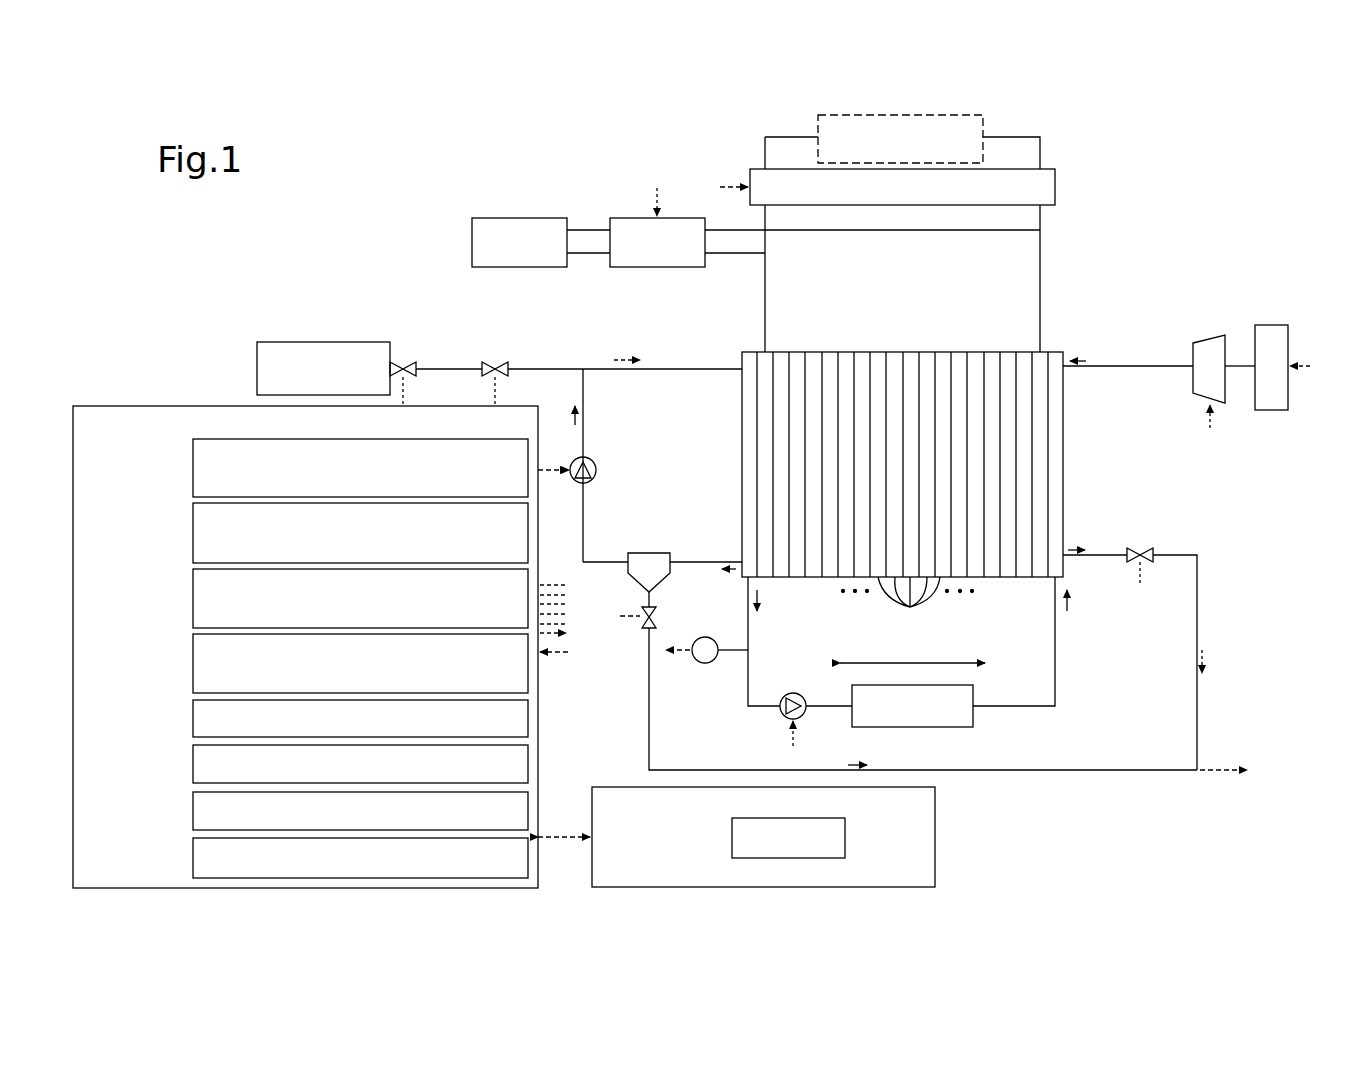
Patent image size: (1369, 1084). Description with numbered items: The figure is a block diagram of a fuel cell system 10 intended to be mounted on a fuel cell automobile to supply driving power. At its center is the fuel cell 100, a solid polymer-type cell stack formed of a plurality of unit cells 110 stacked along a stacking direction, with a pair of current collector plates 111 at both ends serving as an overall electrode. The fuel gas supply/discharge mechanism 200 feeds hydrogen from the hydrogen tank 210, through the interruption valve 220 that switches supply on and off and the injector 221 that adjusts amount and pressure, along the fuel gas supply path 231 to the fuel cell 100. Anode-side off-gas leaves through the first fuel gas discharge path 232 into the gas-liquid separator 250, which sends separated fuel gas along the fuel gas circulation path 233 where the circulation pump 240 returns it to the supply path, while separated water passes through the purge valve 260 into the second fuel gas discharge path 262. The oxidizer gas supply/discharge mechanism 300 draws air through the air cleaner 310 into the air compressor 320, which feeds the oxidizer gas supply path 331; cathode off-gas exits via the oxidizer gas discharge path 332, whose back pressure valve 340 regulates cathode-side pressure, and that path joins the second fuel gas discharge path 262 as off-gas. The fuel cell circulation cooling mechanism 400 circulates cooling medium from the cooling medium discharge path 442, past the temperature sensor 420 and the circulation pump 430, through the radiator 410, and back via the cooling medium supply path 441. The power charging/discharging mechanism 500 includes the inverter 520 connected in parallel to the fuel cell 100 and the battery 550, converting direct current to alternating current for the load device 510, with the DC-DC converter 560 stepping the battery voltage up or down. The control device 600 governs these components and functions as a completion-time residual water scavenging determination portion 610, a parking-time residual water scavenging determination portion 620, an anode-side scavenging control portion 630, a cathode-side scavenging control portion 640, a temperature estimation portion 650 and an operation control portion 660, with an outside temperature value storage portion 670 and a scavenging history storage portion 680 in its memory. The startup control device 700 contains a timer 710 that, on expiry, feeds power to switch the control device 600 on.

The fuel cell system 10 is at (340, 157).
The fuel cell 100 is at (1082, 476).
The unit cells 110 is at (908, 607).
The current collector plates 111 is at (770, 580).
The fuel gas supply/discharge mechanism 200 is at (402, 331).
The hydrogen tank 210 is at (314, 343).
The interruption valve 220 is at (412, 364).
The injector 221 is at (506, 364).
The fuel gas supply path 231 is at (657, 368).
The first fuel gas discharge path 232 is at (712, 557).
The fuel gas circulation path 233 is at (585, 512).
The circulation pump 240 is at (593, 460).
The gas-liquid separator 250 is at (640, 553).
The purge valve 260 is at (640, 622).
The second fuel gas discharge path 262 is at (648, 726).
The oxidizer gas supply/discharge mechanism 300 is at (1126, 309).
The air cleaner 310 is at (1278, 325).
The air compressor 320 is at (1200, 340).
The oxidizer gas supply path 331 is at (1110, 372).
The oxidizer gas discharge path 332 is at (1100, 560).
The back pressure valve 340 is at (1145, 549).
The fuel cell circulation cooling mechanism 400 is at (1082, 682).
The radiator 410 is at (900, 728).
The temperature sensor 420 is at (705, 637).
The circulation pump 430 is at (790, 694).
The cooling medium supply path 441 is at (1000, 708).
The cooling medium discharge path 442 is at (745, 684).
The power charging/discharging mechanism 500 is at (1106, 196).
The load device 510 is at (985, 126).
The inverter 520 is at (1055, 183).
The battery 550 is at (512, 268).
The DC-DC converter 560 is at (645, 268).
The control device 600 is at (130, 406).
The completion-time residual water scavenging determination portion 610 is at (193, 471).
The parking-time residual water scavenging determination portion 620 is at (193, 539).
The anode-side scavenging control portion 630 is at (193, 597).
The cathode-side scavenging control portion 640 is at (193, 662).
The temperature estimation portion 650 is at (193, 716).
The operation control portion 660 is at (193, 764).
The outside temperature value storage portion 670 is at (193, 811).
The scavenging history storage portion 680 is at (193, 857).
The startup control device 700 is at (935, 848).
The timer 710 is at (845, 838).